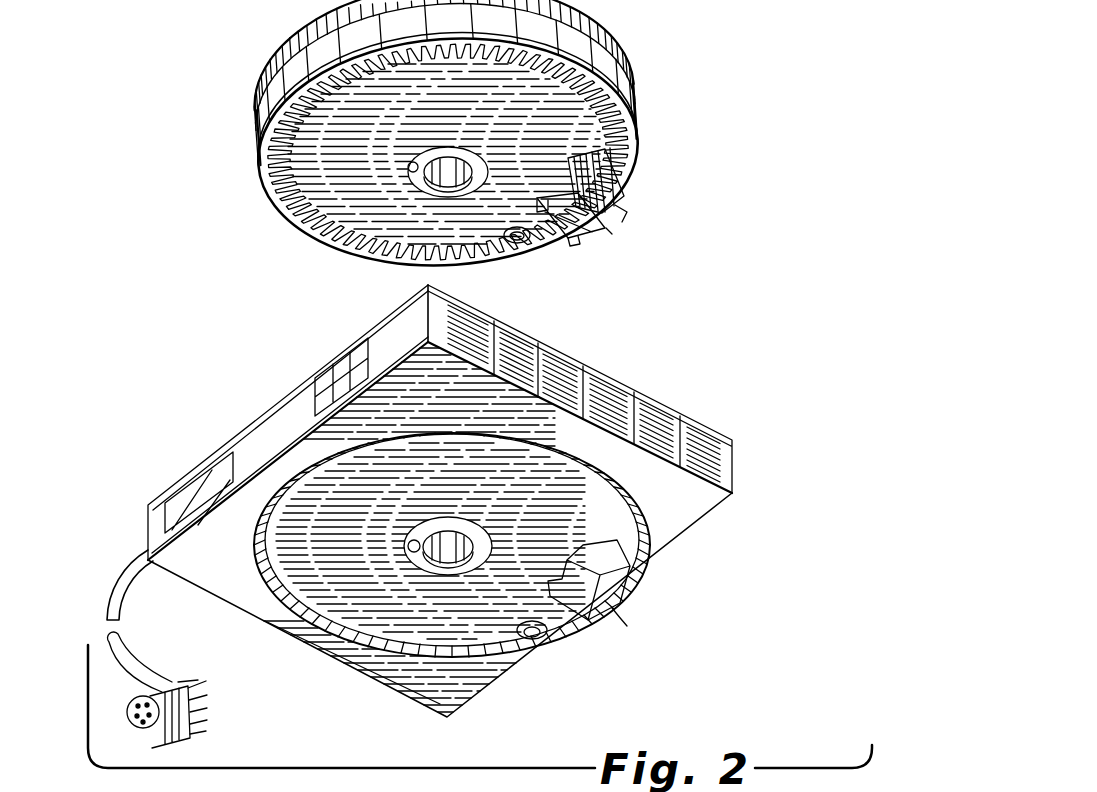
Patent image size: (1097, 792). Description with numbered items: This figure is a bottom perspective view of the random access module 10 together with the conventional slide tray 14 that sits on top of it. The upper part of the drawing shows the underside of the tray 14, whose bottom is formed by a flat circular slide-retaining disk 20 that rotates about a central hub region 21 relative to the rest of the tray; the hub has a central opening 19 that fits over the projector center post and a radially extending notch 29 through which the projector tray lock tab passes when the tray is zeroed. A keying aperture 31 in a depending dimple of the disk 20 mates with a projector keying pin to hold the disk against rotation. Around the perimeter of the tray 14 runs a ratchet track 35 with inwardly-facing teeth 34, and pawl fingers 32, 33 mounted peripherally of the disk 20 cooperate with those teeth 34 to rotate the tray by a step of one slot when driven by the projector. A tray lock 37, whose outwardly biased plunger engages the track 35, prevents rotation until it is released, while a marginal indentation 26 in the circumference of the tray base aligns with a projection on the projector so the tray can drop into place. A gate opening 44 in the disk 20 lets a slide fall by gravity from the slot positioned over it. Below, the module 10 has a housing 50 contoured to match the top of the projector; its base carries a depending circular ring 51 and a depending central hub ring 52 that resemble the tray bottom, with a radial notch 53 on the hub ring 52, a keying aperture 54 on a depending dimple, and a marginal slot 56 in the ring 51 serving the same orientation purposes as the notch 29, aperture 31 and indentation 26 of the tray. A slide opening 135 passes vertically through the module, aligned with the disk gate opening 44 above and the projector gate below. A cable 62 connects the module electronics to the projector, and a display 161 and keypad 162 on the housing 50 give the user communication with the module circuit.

The random access module 10 is at (419, 516).
The slide tray 14 is at (357, 183).
The central opening 19 is at (456, 168).
The slide-retaining disk 20 is at (359, 191).
The central hub region 21 is at (487, 176).
The marginal indentation 26 is at (627, 212).
The radially extending notch 29 is at (416, 166).
The keying aperture 31 is at (522, 245).
The pawl finger 32 is at (570, 248).
The pawl finger 33 is at (594, 240).
The inwardly-facing teeth 34 is at (364, 254).
The ratchet track 35 is at (322, 183).
The tray lock 37 is at (620, 232).
The gate opening 44 is at (549, 202).
The housing 50 is at (300, 412).
The depending circular ring 51 is at (626, 628).
The depending central hub ring 52 is at (490, 549).
The radial notch 53 is at (410, 555).
The keying aperture 54 is at (538, 645).
The marginal slot 56 is at (622, 622).
The cable 62 is at (118, 606).
The slide opening 135 is at (548, 588).
The display 161 is at (204, 490).
The keypad 162 is at (348, 363).